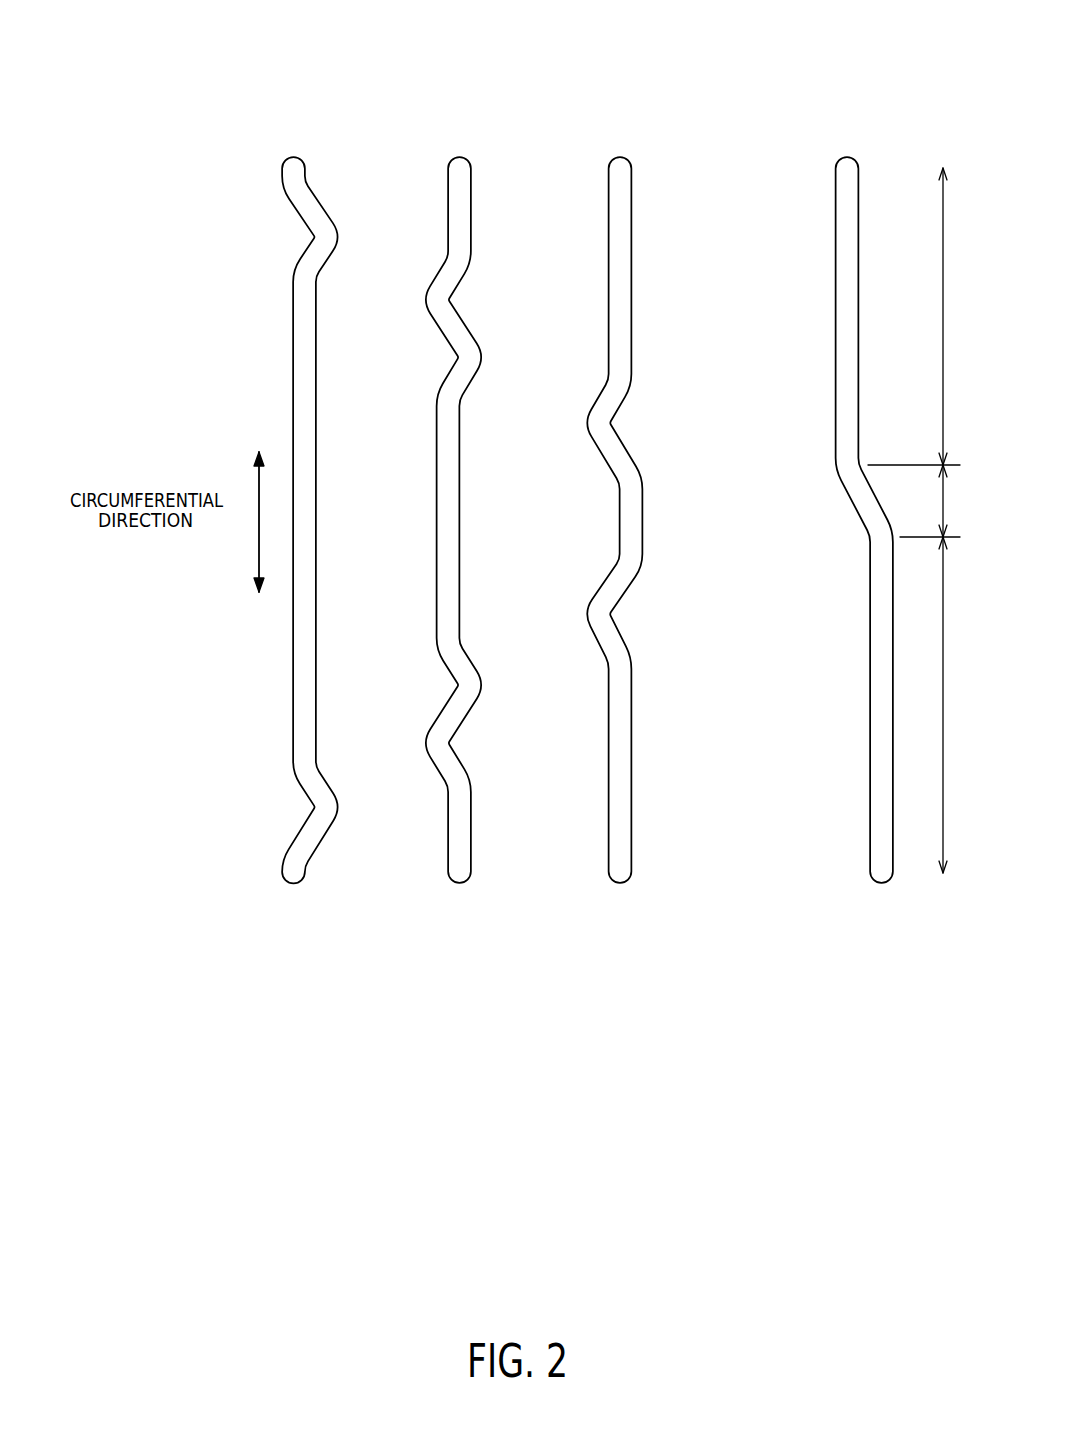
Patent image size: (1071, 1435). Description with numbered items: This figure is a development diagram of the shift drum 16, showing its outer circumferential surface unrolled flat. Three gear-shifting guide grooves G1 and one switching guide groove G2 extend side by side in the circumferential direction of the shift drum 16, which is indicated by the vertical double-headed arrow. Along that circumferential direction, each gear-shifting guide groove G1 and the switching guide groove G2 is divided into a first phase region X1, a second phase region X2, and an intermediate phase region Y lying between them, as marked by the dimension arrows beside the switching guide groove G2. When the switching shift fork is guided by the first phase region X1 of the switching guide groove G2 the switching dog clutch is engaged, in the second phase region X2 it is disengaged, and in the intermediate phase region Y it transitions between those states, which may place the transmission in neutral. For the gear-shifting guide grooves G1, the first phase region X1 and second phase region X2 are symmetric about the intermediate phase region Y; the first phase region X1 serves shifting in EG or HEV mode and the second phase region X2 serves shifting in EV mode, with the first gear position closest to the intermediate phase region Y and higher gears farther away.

The shift drum 16 is at (597, 516).
The gear-shifting guide grooves G1 is at (620, 885).
The switching guide groove G2 is at (882, 885).
The first phase region X1 is at (926, 316).
The intermediate phase region Y is at (935, 501).
The second phase region X2 is at (962, 705).